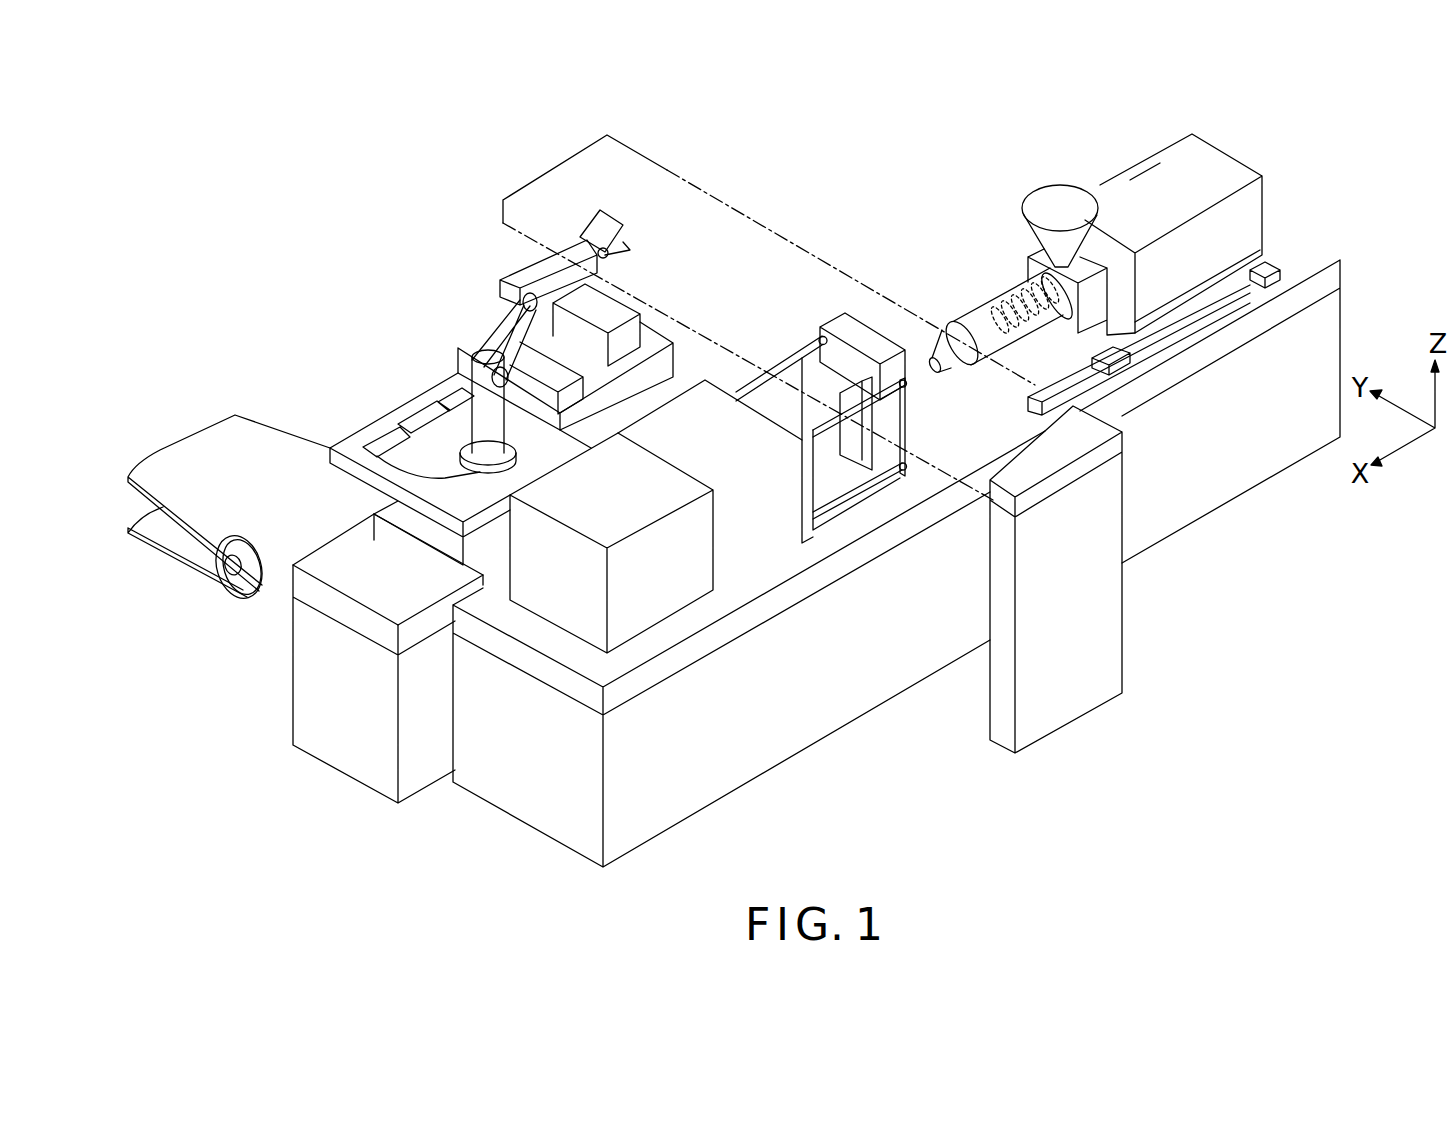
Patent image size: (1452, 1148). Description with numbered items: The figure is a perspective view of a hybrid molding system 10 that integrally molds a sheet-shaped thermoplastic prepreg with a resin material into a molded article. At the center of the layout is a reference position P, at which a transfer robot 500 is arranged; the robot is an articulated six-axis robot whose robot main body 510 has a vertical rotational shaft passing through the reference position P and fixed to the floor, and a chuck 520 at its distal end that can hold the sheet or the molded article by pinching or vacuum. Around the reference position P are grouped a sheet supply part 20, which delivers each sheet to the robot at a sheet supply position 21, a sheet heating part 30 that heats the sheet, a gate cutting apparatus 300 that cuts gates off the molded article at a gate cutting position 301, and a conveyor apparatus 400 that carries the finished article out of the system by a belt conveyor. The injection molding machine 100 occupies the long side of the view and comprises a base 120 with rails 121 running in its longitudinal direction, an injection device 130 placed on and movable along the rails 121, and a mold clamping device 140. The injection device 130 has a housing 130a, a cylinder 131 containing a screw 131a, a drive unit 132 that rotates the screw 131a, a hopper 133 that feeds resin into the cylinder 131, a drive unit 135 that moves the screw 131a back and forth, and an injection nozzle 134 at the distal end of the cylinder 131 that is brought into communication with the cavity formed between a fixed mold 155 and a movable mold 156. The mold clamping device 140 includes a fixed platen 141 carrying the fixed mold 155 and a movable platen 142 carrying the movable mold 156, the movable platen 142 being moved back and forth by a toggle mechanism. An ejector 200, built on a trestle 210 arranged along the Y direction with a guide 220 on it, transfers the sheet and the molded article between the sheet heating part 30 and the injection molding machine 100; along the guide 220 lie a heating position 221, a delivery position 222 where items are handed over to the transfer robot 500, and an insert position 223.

The hybrid molding system 10 is at (748, 462).
The sheet supply part 20 is at (448, 441).
The sheet supply position 21 is at (430, 420).
The sheet heating part 30 is at (468, 350).
The injection molding machine 100 is at (912, 462).
The base 120 is at (1307, 260).
The rails 121 is at (1300, 260).
The injection device 130 is at (1091, 247).
The housing 130a is at (1138, 188).
The cylinder 131 is at (999, 283).
The screw 131a is at (987, 307).
The drive unit 132 is at (1113, 192).
The hopper 133 is at (1036, 190).
The injection nozzle 134 is at (948, 367).
The drive unit 135 is at (1202, 170).
The mold clamping device 140 is at (732, 542).
The fixed platen 141 is at (913, 463).
The movable platen 142 is at (806, 527).
The fixed mold 155 is at (878, 452).
The movable mold 156 is at (825, 487).
The ejector 200 is at (1102, 590).
The trestle 210 is at (1067, 693).
The guide 220 is at (751, 281).
The heating position 221 is at (580, 183).
The delivery position 222 is at (695, 242).
The insert position 223 is at (855, 337).
The gate cutting apparatus 300 is at (344, 658).
The gate cutting position 301 is at (380, 573).
The conveyor apparatus 400 is at (173, 468).
The transfer robot 500 is at (543, 289).
The robot main body 510 is at (477, 382).
The chuck 520 is at (600, 228).
The reference position P is at (372, 513).